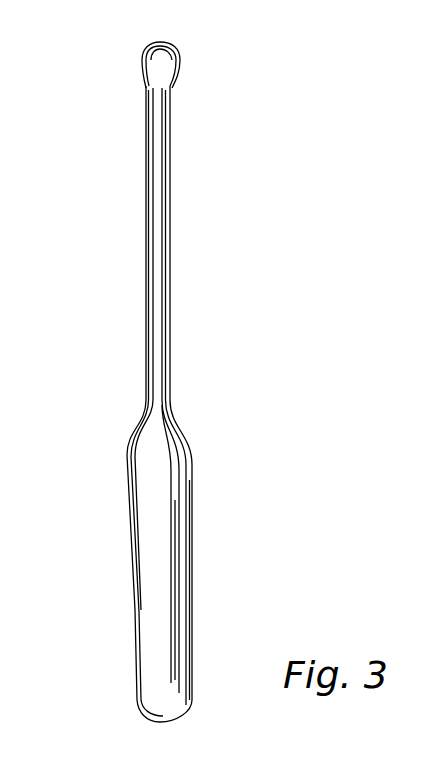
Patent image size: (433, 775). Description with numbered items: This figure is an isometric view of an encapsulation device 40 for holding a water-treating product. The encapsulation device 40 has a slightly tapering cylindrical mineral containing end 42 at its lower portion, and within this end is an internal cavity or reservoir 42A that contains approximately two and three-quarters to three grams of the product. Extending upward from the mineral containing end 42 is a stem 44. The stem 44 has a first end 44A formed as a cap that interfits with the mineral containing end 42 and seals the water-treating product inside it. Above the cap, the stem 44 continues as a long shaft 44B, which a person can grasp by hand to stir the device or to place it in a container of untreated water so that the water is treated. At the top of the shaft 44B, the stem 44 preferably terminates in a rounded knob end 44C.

The encapsulation device 40 is at (263, 186).
The mineral containing end 42 is at (206, 500).
The internal cavity or reservoir 42A is at (167, 563).
The stem 44 is at (183, 308).
The first end 44A is at (128, 447).
The shaft 44B is at (146, 230).
The knob end 44C is at (141, 58).